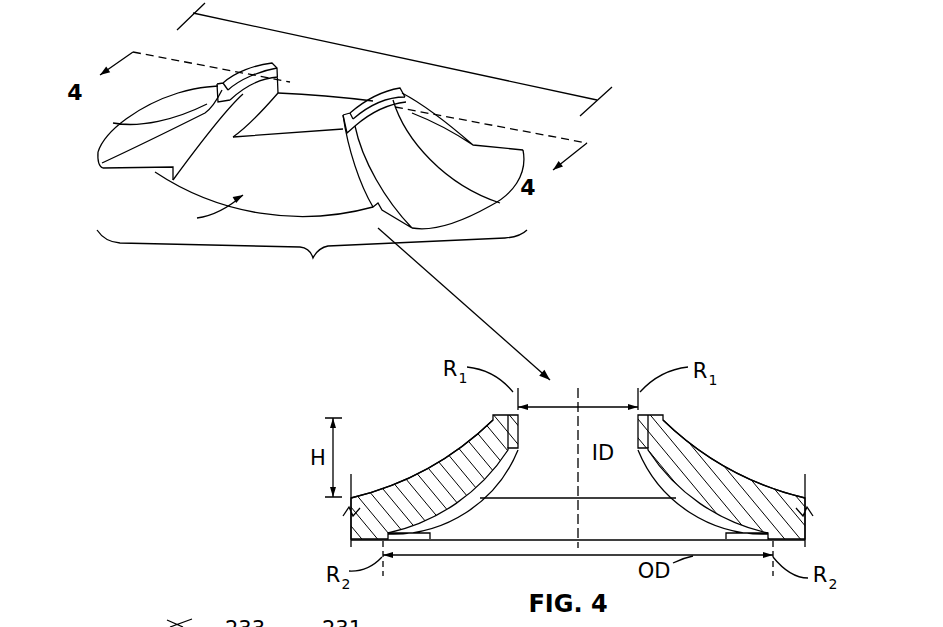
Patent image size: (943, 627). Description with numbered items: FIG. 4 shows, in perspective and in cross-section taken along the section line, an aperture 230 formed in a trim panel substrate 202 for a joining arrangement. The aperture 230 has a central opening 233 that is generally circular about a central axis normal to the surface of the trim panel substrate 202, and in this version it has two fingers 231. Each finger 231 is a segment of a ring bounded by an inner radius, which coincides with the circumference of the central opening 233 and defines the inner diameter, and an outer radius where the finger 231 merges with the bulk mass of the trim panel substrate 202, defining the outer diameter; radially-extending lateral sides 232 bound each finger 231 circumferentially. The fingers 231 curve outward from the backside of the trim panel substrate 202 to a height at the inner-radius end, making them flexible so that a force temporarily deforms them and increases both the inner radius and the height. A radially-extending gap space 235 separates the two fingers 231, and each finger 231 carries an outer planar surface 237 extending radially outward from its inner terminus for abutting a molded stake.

The trim panel substrate 202 is at (409, 67).
The aperture 230 is at (312, 191).
The finger 231 is at (112, 145).
The lateral side 232 is at (195, 147).
The central opening 233 is at (330, 57).
The gap space 235 is at (199, 213).
The outer planar surface 237 is at (263, 63).